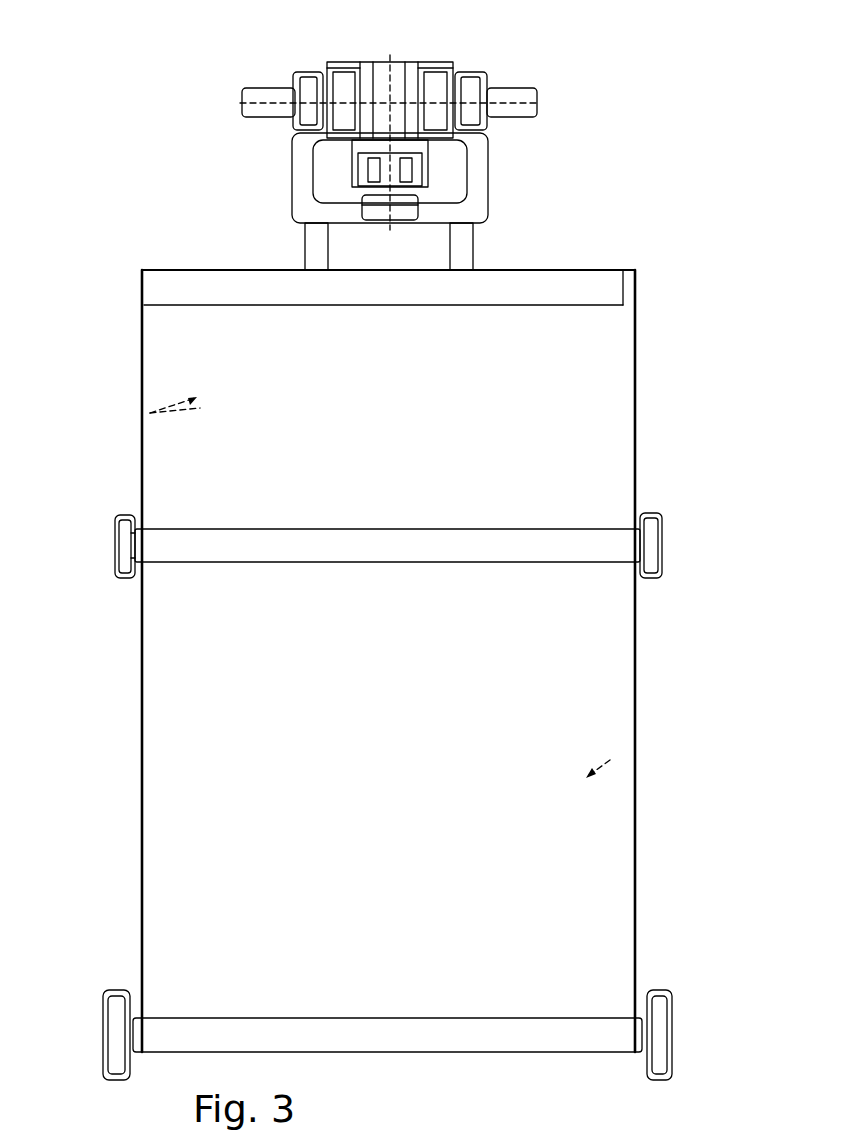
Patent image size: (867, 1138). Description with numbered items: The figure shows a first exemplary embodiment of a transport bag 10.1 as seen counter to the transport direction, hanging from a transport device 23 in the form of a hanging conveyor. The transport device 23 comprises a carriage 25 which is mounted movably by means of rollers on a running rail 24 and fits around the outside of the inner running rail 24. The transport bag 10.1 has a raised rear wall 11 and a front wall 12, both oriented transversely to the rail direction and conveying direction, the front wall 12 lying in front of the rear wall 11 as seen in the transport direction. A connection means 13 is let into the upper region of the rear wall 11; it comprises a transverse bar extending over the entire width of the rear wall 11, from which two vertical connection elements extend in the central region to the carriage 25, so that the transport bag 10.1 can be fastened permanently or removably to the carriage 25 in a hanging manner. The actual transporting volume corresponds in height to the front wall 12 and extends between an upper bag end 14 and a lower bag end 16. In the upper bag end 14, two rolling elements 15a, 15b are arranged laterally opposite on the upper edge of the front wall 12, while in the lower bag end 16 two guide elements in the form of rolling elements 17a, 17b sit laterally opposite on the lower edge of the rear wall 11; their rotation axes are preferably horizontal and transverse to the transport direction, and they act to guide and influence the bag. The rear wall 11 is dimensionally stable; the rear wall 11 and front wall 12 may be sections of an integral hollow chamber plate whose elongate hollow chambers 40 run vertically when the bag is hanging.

The transport bag 10.1 is at (652, 697).
The rear wall 11 is at (527, 423).
The front wall 12 is at (227, 735).
The connection means 13 is at (250, 298).
The upper bag end 14 is at (461, 543).
The rolling element 15a is at (126, 540).
The rolling element 15b is at (656, 566).
The lower bag end 16 is at (386, 1034).
The rolling element 17a is at (126, 1031).
The rolling element 17b is at (672, 1000).
The transport device 23 is at (537, 58).
The running rail 24 is at (360, 62).
The carriage 25 is at (306, 151).
The hollow chambers 40 is at (150, 413).